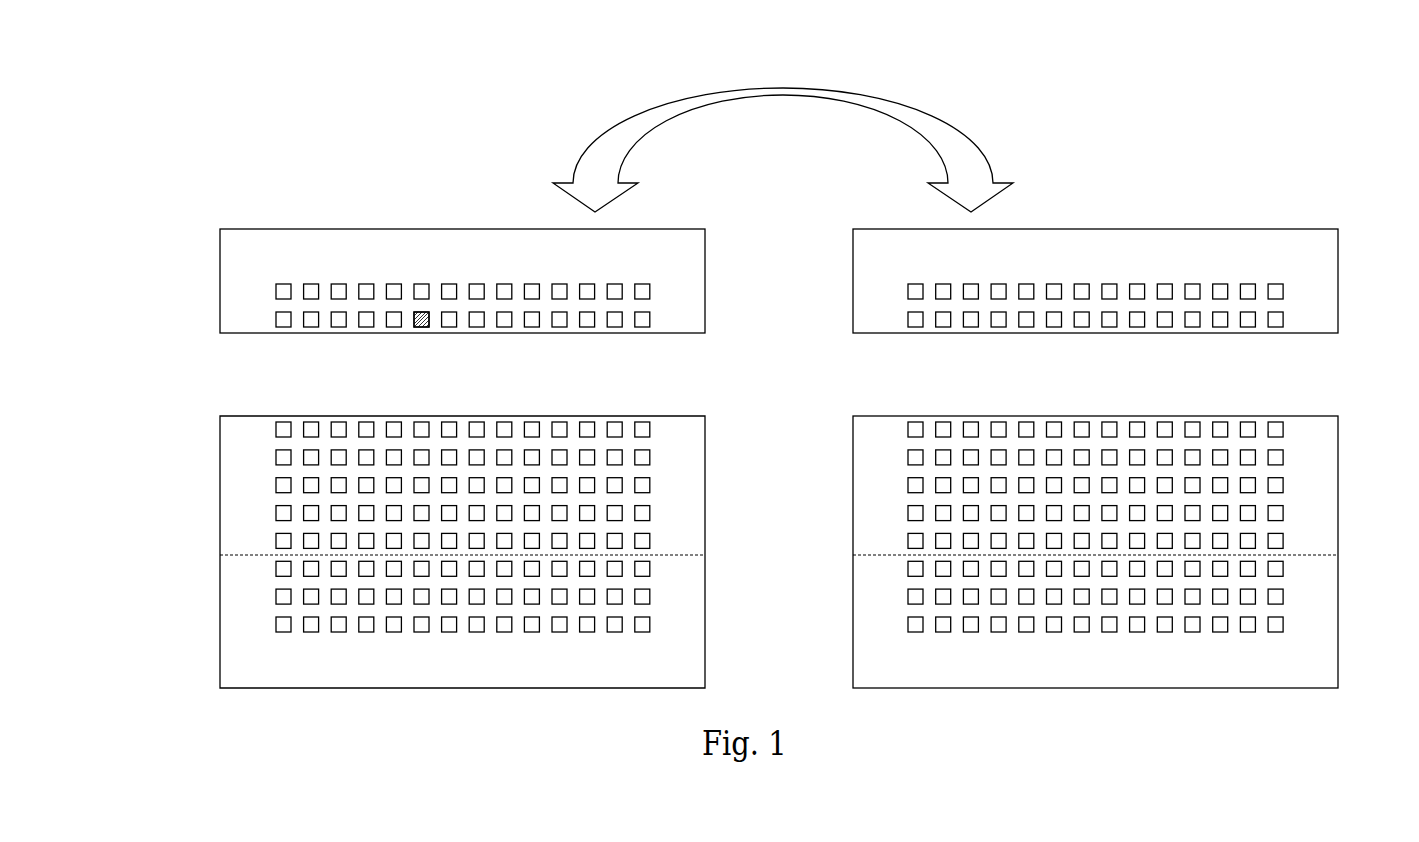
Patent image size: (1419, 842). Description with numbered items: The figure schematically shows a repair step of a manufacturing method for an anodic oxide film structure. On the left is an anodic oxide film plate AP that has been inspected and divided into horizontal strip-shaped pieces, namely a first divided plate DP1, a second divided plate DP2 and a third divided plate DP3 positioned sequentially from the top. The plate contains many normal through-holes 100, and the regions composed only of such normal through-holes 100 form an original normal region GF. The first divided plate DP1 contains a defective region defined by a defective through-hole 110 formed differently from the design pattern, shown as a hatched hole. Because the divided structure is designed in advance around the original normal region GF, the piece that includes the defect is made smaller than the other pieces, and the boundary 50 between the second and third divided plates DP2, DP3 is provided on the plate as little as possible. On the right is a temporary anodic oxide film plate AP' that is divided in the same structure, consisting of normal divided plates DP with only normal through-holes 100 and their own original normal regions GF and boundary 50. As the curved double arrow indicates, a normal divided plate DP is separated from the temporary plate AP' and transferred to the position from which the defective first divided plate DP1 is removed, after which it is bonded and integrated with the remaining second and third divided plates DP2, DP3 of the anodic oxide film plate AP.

The anodic oxide film plate AP is at (390, 372).
The temporary anodic oxide film plate AP' is at (1126, 372).
The first divided plate DP1 is at (392, 228).
The second divided plate DP2 is at (219, 483).
The third divided plate DP3 is at (219, 622).
The divided plate DP is at (1093, 228).
The defective through-hole 110 is at (425, 314).
The normal through-hole 100 is at (641, 290).
The original normal region GF is at (1305, 297).
The boundary 50 is at (670, 556).